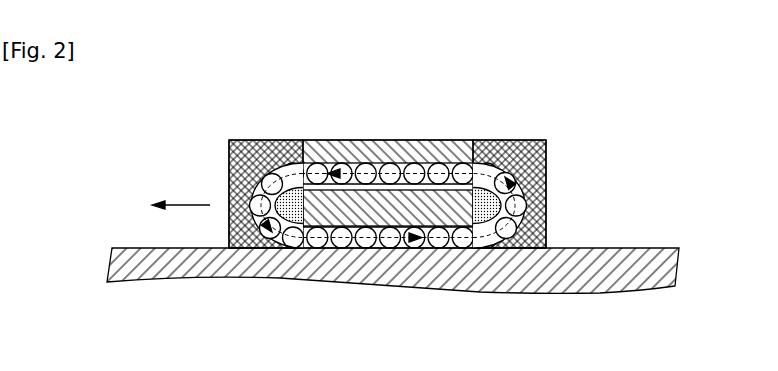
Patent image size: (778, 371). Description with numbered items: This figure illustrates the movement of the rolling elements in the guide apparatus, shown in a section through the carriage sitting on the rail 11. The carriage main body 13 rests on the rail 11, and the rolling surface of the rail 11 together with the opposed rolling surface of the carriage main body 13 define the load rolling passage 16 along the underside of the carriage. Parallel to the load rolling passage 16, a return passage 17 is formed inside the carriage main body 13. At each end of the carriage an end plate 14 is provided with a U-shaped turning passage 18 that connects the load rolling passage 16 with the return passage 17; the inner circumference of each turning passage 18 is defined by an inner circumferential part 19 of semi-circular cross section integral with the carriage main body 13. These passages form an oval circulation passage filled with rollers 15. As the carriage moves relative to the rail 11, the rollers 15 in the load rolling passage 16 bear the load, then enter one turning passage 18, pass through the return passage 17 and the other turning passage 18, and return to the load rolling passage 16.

The rail 11 is at (347, 284).
The carriage main body 13 is at (347, 140).
The end plate 14 is at (272, 140).
The roller 15 is at (289, 246).
The load rolling passage 16 is at (437, 252).
The return passage 17 is at (440, 142).
The turning passage 18 is at (547, 173).
The inner circumferential part 19 is at (547, 198).